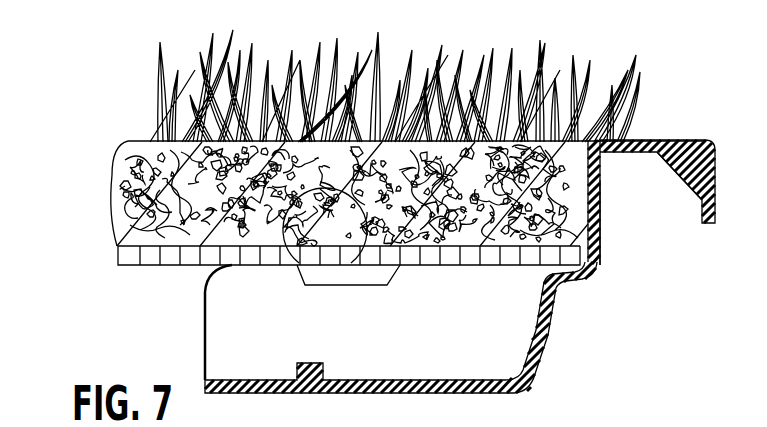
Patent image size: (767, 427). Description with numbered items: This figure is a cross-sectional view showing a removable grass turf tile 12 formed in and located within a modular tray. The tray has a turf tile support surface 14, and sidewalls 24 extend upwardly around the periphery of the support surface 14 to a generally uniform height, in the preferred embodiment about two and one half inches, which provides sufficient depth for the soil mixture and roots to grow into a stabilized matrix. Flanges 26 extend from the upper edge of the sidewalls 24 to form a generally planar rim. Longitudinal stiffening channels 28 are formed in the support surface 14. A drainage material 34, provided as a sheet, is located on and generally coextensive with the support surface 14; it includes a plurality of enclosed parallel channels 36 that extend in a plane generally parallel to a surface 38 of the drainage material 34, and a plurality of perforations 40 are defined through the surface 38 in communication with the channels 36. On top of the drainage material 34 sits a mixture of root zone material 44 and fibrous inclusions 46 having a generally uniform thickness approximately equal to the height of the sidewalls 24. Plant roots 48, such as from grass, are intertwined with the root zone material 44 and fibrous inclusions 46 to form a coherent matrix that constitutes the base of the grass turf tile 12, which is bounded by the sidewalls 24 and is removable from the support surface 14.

The grass turf tile 12 is at (110, 160).
The turf tile support surface 14 is at (477, 265).
The sidewalls 24 is at (590, 203).
The flanges 26 is at (645, 140).
The longitudinal stiffening channels 28 is at (300, 284).
The drainage material 34 is at (147, 265).
The enclosed parallel channels 36 is at (433, 265).
The surface of the drainage material 38 is at (142, 246).
The perforations 40 is at (232, 265).
The root zone material 44 is at (113, 172).
The fibrous inclusions 46 is at (297, 264).
The plant roots 48 is at (590, 177).